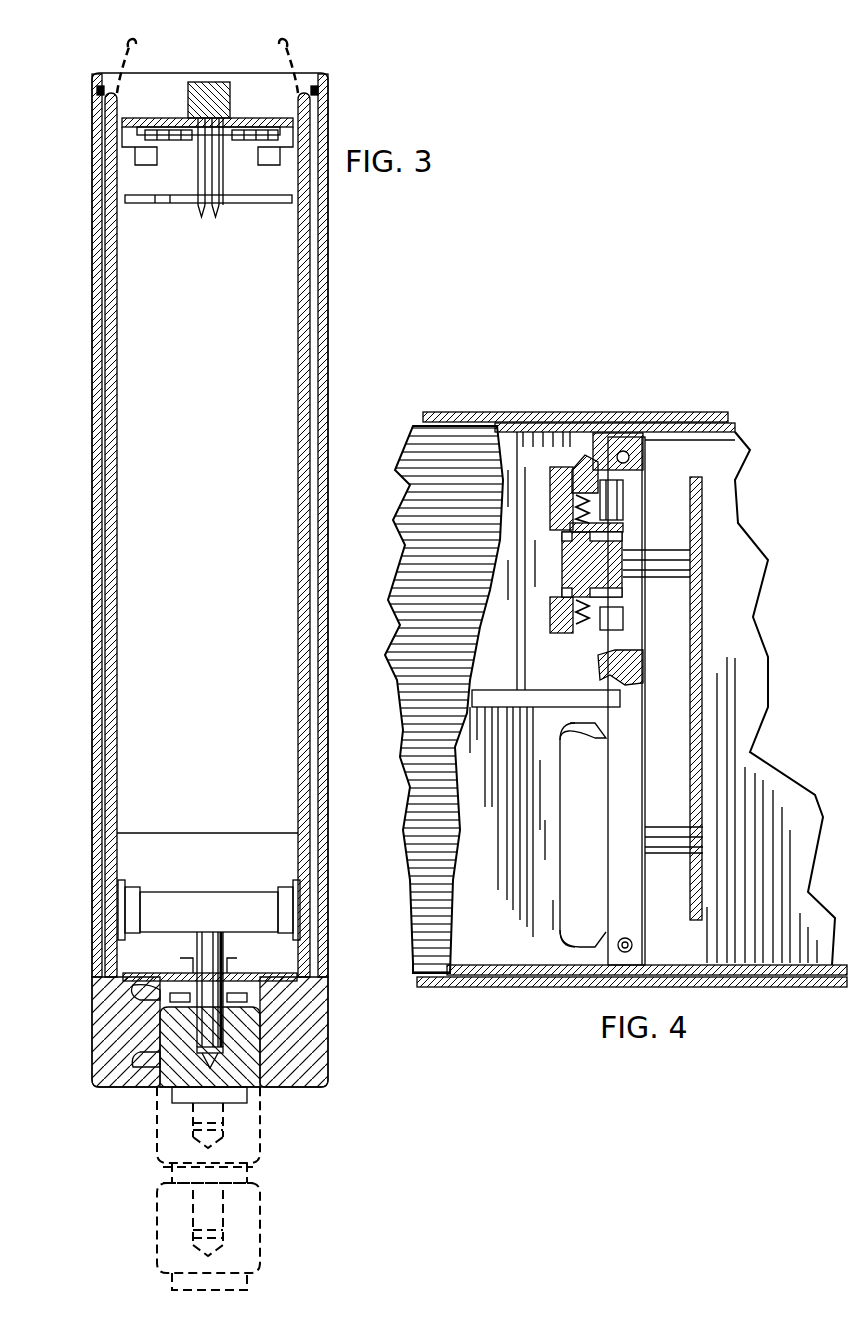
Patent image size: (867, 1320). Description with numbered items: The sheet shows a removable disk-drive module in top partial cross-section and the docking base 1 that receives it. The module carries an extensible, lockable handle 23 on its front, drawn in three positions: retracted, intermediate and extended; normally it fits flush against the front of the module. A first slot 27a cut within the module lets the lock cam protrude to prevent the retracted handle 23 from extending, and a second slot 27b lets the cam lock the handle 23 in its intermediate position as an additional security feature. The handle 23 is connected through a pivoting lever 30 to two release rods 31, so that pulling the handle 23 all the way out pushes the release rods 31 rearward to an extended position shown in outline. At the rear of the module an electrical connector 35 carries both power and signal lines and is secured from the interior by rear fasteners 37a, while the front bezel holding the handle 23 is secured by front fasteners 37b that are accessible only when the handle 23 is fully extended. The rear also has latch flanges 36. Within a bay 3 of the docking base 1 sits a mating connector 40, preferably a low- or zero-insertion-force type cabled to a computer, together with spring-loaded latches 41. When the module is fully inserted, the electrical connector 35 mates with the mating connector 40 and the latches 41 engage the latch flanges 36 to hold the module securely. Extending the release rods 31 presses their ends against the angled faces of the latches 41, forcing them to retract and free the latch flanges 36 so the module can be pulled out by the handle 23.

In FIG. 4, the docking base 1 is at (648, 400).
In FIG. 4, the bay 3 is at (422, 507).
In FIG. 3, the handle 23 is at (257, 1090).
In FIG. 3, the first slot 27a is at (133, 998).
In FIG. 3, the second slot 27b is at (135, 1070).
In FIG. 3, the pivoting lever 30 is at (263, 917).
In FIG. 3, the release rods 31 is at (115, 237).
In FIG. 3, the electrical connector 35 is at (218, 82).
In FIG. 3, the latch flanges 36 is at (112, 82).
In FIG. 3, the rear fasteners 37a is at (125, 170).
In FIG. 3, the front fasteners 37b is at (157, 981).
In FIG. 4, the mating connector 40 is at (608, 547).
In FIG. 4, the spring-loaded latches 41 is at (583, 460).